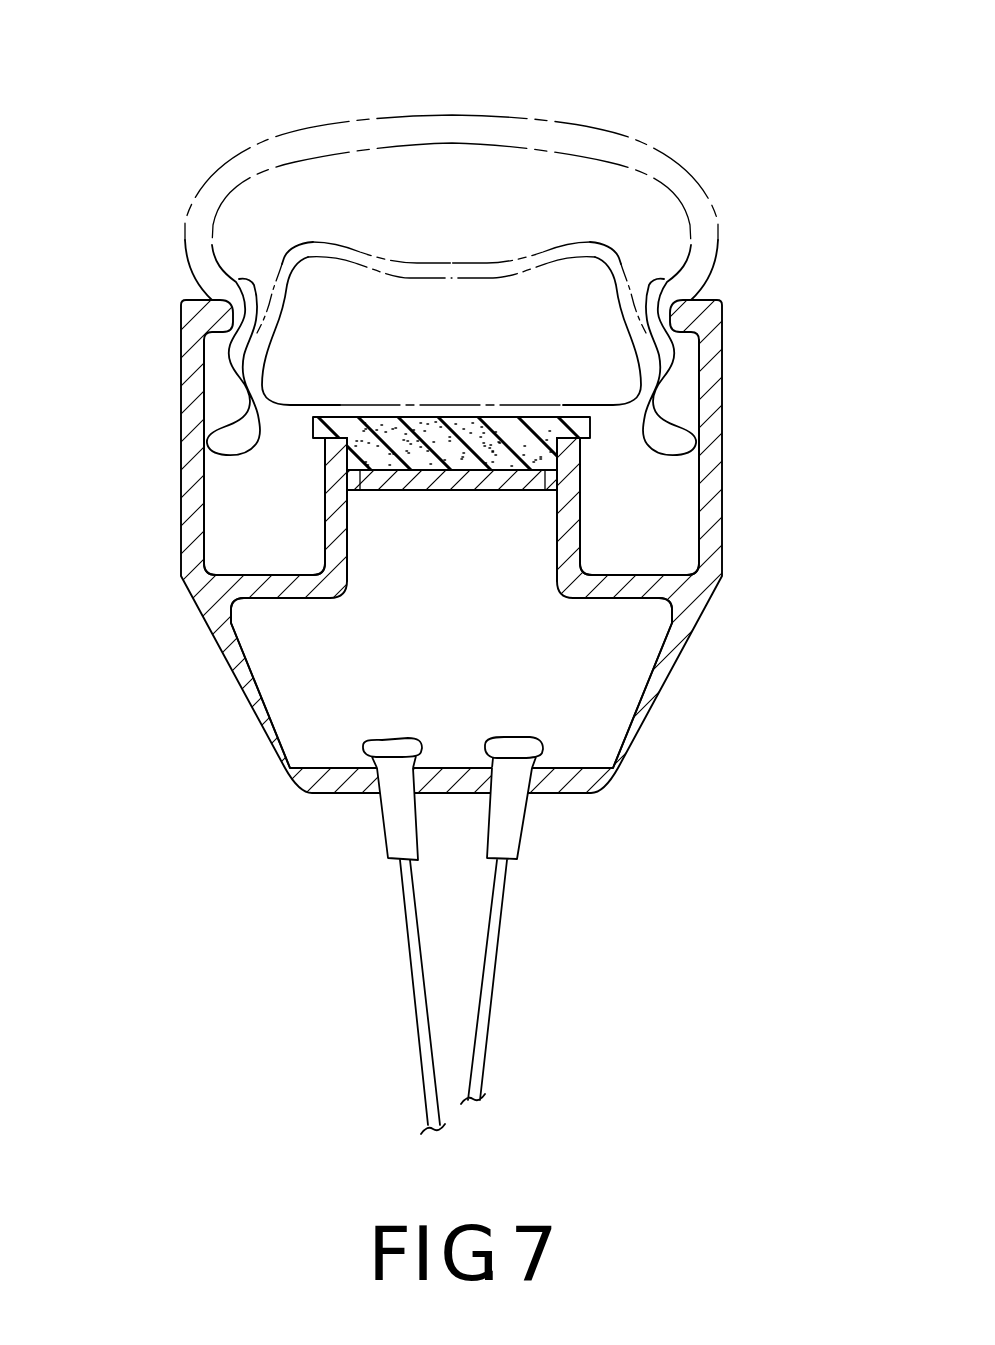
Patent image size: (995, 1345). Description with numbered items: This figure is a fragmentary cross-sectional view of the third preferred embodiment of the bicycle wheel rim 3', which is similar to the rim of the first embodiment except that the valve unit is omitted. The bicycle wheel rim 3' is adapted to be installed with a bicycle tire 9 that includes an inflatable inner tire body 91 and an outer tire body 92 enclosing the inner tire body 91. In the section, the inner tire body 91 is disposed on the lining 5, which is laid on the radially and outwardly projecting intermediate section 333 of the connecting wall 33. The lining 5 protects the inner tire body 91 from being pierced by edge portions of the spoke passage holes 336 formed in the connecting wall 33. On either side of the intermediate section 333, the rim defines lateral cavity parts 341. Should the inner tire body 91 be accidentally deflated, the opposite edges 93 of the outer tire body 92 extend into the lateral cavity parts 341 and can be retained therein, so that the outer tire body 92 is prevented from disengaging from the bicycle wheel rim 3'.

The bicycle tire 9 is at (454, 227).
The outer tire body 92 is at (673, 170).
The inner tire body 91 is at (605, 242).
The opposite edges 93 is at (212, 440).
The intermediate section 333 is at (455, 476).
The lining 5 is at (543, 455).
The bicycle wheel rim 3' is at (484, 547).
The lateral cavity parts 341 is at (257, 537).
The spoke passage holes 336 is at (253, 600).
The connecting wall 33 is at (615, 583).